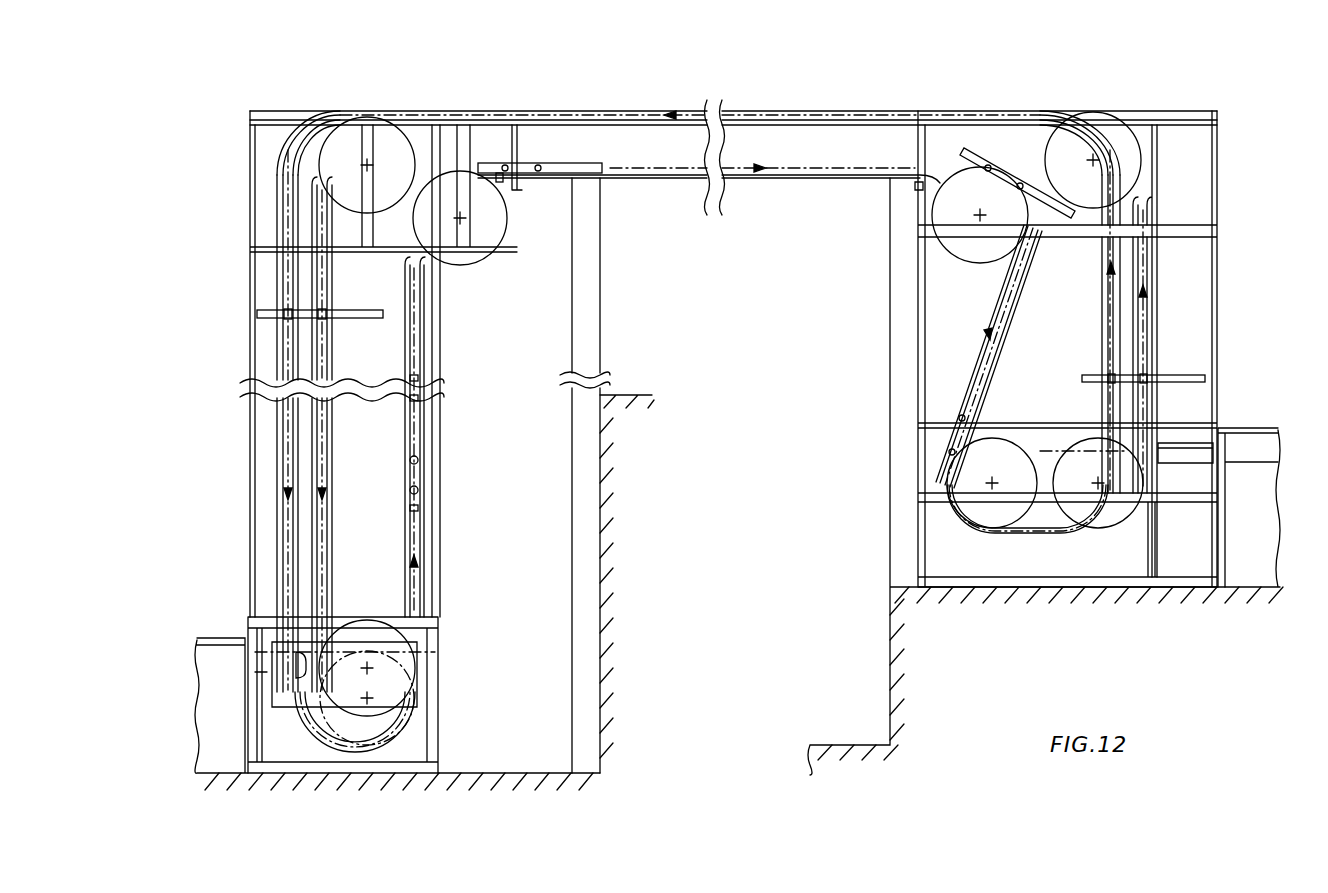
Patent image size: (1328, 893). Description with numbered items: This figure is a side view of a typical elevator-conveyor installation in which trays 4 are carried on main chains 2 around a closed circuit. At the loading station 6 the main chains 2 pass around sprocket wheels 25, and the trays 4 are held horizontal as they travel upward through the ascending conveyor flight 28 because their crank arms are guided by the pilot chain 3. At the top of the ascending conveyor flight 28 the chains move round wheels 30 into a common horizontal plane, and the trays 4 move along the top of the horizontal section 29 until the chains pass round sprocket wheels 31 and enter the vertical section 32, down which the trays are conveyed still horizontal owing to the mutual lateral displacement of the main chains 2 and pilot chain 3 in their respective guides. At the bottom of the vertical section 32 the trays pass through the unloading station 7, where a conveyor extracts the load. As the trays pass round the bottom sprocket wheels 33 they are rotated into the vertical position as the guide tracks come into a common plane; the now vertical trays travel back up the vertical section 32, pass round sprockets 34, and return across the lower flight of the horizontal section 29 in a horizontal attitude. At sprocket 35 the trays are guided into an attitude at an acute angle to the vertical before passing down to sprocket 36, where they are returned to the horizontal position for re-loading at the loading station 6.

The main chains 2 is at (320, 432).
The pilot chain 3 is at (285, 405).
The trays 4 is at (349, 311).
The loading station 6 is at (1226, 425).
The unloading station 7 is at (238, 609).
The sprocket wheels 25 is at (1104, 522).
The ascending conveyor flight 28 is at (1162, 280).
The horizontal section 29 is at (858, 110).
The wheels 30 is at (1142, 152).
The sprocket wheels 31 is at (383, 133).
The vertical section 32 is at (242, 340).
The bottom sprocket wheels 33 is at (392, 700).
The sprockets 34 is at (466, 258).
The sprocket 35 is at (942, 206).
The sprocket 36 is at (996, 437).